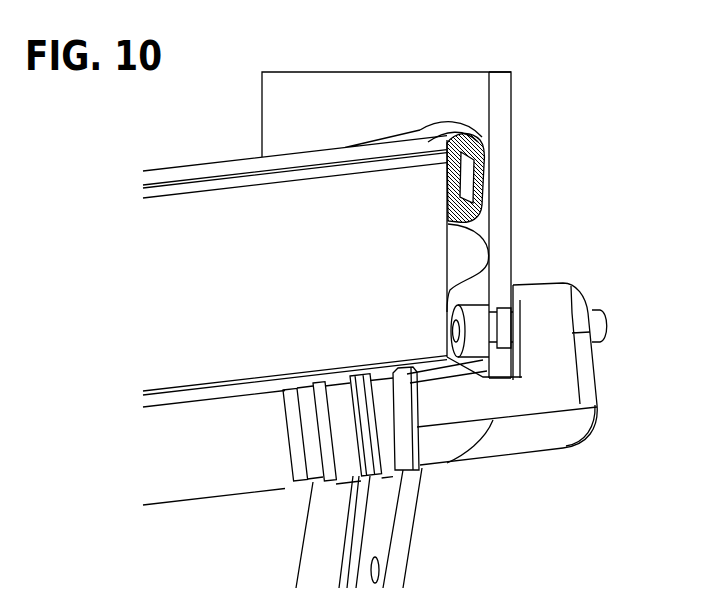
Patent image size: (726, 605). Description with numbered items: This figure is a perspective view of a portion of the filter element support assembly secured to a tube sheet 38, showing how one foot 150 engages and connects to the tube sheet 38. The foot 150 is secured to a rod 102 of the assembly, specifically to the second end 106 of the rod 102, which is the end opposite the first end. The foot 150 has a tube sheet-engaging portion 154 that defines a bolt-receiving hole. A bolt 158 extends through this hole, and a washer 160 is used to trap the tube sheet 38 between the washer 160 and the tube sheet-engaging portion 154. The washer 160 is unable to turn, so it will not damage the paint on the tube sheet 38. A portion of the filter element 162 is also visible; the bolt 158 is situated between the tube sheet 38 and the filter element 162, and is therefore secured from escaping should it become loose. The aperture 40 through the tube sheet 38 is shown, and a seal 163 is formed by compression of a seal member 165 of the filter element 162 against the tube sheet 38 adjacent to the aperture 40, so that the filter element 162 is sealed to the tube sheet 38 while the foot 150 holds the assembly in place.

The tube sheet 38 is at (277, 92).
The aperture 40 is at (506, 160).
The rod 102 is at (184, 490).
The second end 106 is at (288, 480).
The foot 150 is at (558, 492).
The tube sheet-engaging portion 154 is at (542, 294).
The bolt 158 is at (596, 318).
The washer 160 is at (470, 305).
The filter element 162 is at (207, 200).
The seal 163 is at (486, 166).
The seal member 165 is at (455, 124).